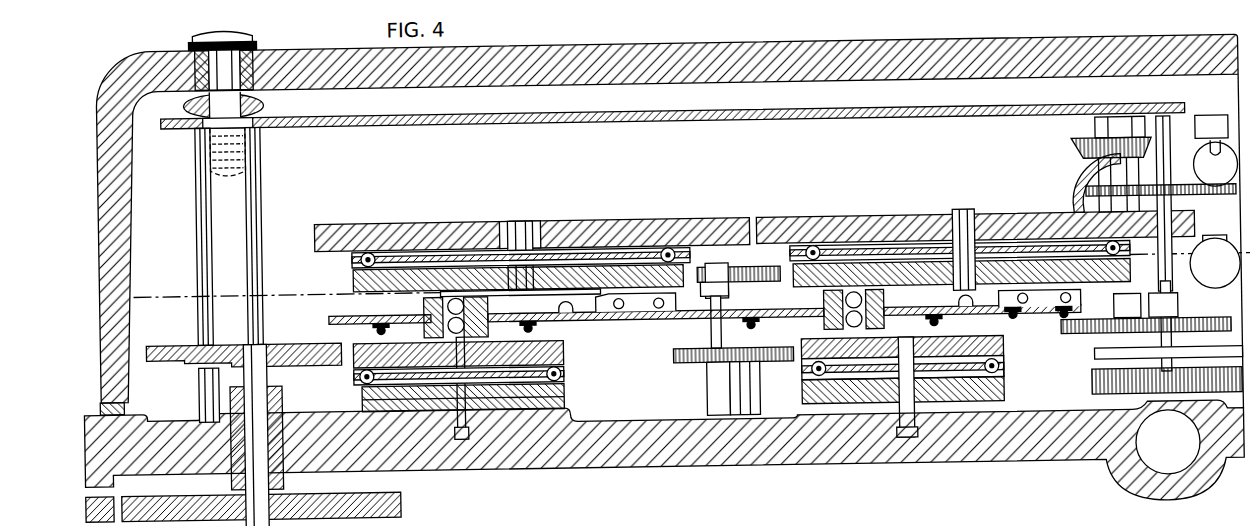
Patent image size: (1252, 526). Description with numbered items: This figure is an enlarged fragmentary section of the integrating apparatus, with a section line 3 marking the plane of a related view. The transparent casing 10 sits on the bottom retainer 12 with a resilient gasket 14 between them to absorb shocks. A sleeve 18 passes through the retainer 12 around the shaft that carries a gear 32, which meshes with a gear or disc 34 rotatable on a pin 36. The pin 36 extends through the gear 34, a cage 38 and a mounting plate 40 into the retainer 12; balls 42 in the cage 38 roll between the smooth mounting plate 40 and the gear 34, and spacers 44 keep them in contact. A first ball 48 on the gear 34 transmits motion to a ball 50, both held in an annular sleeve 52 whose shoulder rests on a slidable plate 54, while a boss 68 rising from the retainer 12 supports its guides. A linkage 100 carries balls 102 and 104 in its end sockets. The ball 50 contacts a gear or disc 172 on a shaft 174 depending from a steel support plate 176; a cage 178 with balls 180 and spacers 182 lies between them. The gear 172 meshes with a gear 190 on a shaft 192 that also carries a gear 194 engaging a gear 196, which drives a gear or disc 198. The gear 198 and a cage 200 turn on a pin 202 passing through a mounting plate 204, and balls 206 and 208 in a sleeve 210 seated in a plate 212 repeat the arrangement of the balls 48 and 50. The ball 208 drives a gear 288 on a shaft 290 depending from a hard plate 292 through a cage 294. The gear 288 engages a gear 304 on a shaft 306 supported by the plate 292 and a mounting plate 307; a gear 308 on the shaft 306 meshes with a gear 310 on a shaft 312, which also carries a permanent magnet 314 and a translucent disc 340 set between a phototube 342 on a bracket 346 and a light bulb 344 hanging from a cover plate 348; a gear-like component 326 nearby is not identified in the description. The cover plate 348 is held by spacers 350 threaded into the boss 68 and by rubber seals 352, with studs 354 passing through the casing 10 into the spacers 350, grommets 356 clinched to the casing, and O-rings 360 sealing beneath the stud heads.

The section line 3- 3 is at (144, 298).
The casing 10 is at (585, 44).
The bottom retainer 12 is at (742, 468).
The gasket 14 is at (122, 405).
The sleeve 18 is at (280, 394).
The gear 32 is at (275, 340).
The gear or disc 34 is at (562, 346).
The pin 36 is at (466, 340).
The cage 38 is at (560, 378).
The mounting plate 40 is at (360, 388).
The balls 42 is at (562, 372).
The spacers 44 is at (362, 405).
The first ball 48 is at (384, 325).
The ball 50 is at (495, 292).
The annular sleeve 52 is at (423, 302).
The plate 54 is at (335, 312).
The boss 68 is at (197, 392).
The linkage 100 is at (674, 304).
The ball 102 is at (618, 312).
The ball 104 is at (658, 312).
The gear or disc 172 is at (353, 277).
The shaft 174 is at (532, 222).
The support plate 176 is at (315, 234).
The cage 178 is at (352, 256).
The balls 180 is at (666, 249).
The spacers 182 is at (505, 220).
The gear 190 is at (735, 269).
The shaft 192 is at (710, 334).
The gear 194 is at (705, 364).
The gear 196 is at (758, 367).
The gear or disc 198 is at (1002, 372).
The cage 200 is at (1002, 385).
The pin 202 is at (908, 442).
The mounting plate 204 is at (1002, 403).
The ball 206 is at (870, 342).
The ball 208 is at (883, 302).
The sleeve 210 is at (823, 302).
The plate 212 is at (1038, 320).
The gear 288 is at (998, 303).
The shaft 290 is at (960, 218).
The plate 292 is at (850, 220).
The cage 294 is at (800, 249).
The gear 304 is at (1072, 305).
The shaft 306 is at (1118, 184).
The mounting plate 307 is at (1093, 361).
The gear 308 is at (1062, 340).
The gear 310 is at (1172, 330).
The shaft 312 is at (1075, 208).
The permanent magnet 314 is at (1090, 392).
The bevel gear 326 is at (1073, 150).
The translucent disc 340 is at (1210, 204).
The phototube 342 is at (1215, 248).
The light bulb 344 is at (1196, 182).
The bracket 346 is at (1215, 263).
The cover plate 348 is at (993, 122).
The spacers 350 is at (262, 184).
The seals 352 is at (267, 100).
The studs 354 is at (255, 122).
The grommets 356 is at (256, 40).
The O-rings 360 is at (196, 38).